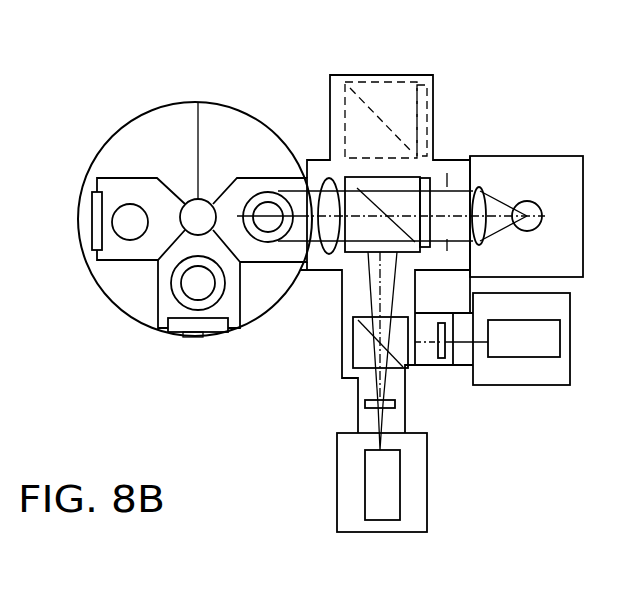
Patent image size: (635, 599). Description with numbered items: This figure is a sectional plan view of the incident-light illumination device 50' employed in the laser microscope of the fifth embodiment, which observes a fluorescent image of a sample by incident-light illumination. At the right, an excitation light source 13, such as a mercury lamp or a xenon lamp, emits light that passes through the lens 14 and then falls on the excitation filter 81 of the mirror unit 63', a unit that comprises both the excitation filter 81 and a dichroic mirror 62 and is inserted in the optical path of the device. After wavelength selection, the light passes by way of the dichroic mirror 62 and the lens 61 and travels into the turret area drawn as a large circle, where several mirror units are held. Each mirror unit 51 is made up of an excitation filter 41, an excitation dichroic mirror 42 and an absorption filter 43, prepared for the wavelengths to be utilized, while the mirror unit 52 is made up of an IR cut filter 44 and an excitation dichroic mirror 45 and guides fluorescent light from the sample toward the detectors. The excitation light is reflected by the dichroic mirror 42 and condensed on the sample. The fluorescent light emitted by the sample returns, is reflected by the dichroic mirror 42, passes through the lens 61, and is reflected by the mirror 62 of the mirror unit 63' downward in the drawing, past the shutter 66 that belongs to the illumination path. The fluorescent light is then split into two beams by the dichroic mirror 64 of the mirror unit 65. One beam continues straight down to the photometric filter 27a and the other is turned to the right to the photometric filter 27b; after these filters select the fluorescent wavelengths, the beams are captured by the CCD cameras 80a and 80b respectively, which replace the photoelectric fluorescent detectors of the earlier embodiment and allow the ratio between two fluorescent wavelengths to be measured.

The light source 13 is at (530, 230).
The lens 14 is at (488, 203).
The photometric filter 27a is at (364, 404).
The photometric filter 27b is at (442, 360).
The excitation filter 41 is at (182, 338).
The excitation dichroic mirror 42 is at (283, 197).
The absorption filter 43 is at (268, 206).
The IR cut filter 44 is at (91, 228).
The excitation dichroic mirror 45 is at (120, 234).
The incident-light illumination device 50' is at (491, 180).
The mirror unit 51 is at (262, 172).
The mirror unit 52 is at (117, 265).
The lens 61 is at (330, 256).
The dichroic mirror 62 is at (437, 148).
The mirror unit 63' is at (410, 123).
The dichroic mirror 64 is at (357, 320).
The mirror unit 65 is at (355, 345).
The shutter 66 is at (452, 248).
The CCD camera 80a is at (428, 468).
The CCD camera 80b is at (538, 387).
The excitation filter 81 is at (432, 176).